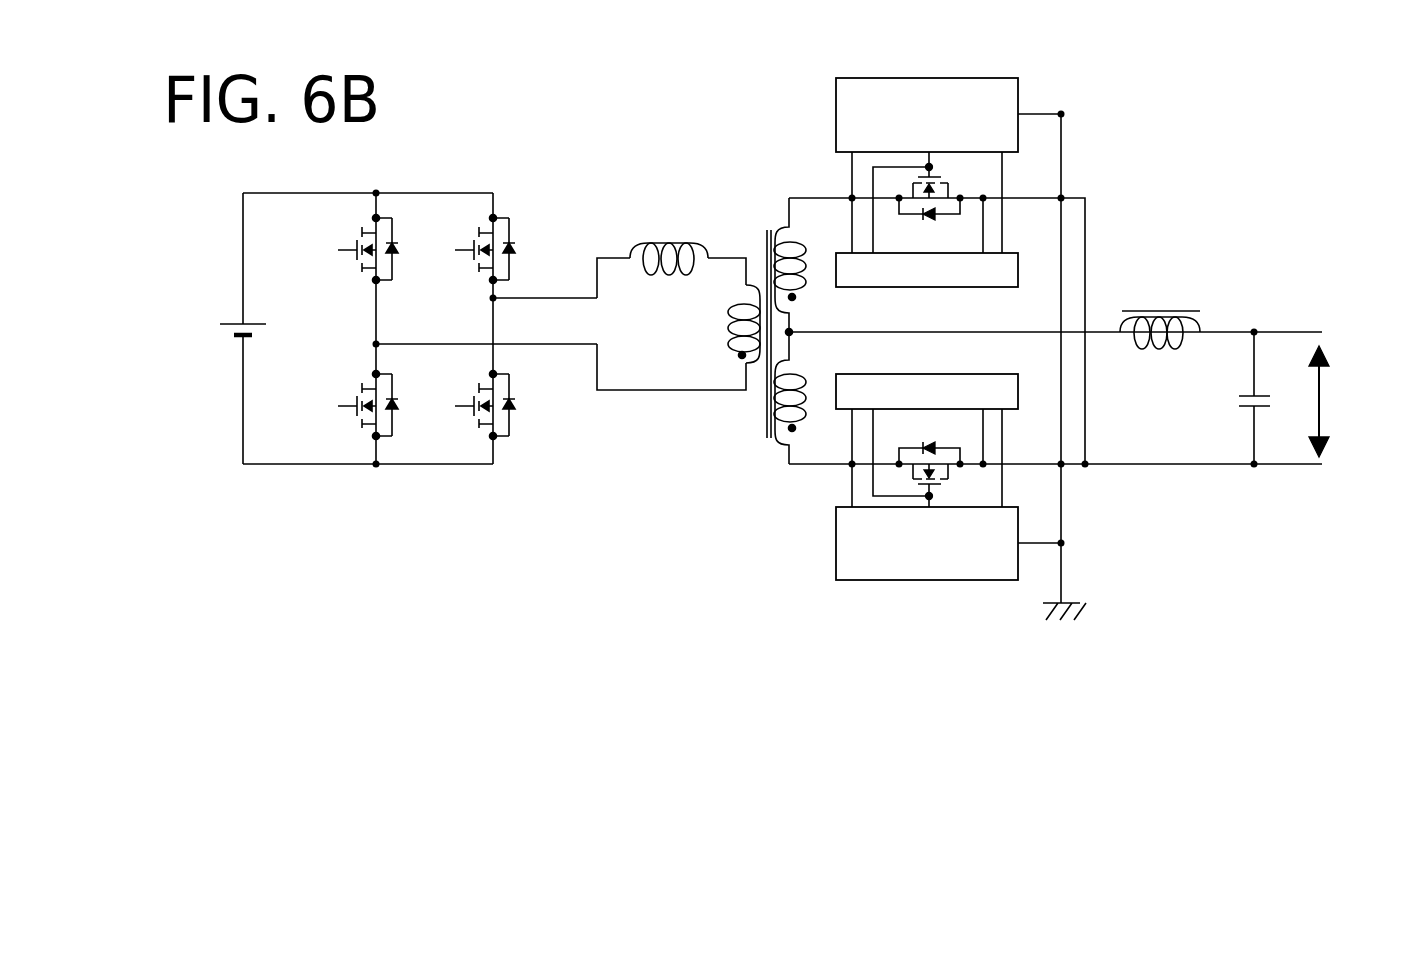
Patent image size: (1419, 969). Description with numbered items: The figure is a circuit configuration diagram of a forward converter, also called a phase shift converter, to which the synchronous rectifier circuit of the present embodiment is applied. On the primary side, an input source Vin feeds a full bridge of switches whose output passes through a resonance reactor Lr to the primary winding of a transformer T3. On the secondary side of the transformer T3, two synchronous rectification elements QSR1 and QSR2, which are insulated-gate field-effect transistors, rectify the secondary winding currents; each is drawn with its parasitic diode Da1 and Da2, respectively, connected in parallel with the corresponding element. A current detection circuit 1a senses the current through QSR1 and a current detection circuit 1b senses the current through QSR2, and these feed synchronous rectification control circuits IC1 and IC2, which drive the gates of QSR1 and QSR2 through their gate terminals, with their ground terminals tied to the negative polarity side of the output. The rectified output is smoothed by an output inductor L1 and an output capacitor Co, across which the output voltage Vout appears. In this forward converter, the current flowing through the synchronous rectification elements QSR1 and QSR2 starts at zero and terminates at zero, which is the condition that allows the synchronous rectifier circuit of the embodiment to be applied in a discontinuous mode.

The synchronous rectification control circuit IC1 is at (1018, 80).
The synchronous rectification control circuit IC2 is at (836, 519).
The current detection circuit 1a is at (980, 287).
The current detection circuit 1b is at (977, 374).
The diode Da1 is at (921, 216).
The diode Da2 is at (922, 447).
The synchronous rectification element QSR1 is at (923, 209).
The synchronous rectification element QSR2 is at (922, 454).
The resonance reactor Lr is at (669, 246).
The transformer T3 is at (767, 342).
The output inductor L1 is at (1160, 312).
The output capacitor Co is at (1269, 398).
The input voltage source Vin is at (222, 336).
The output voltage Vout is at (1346, 401).